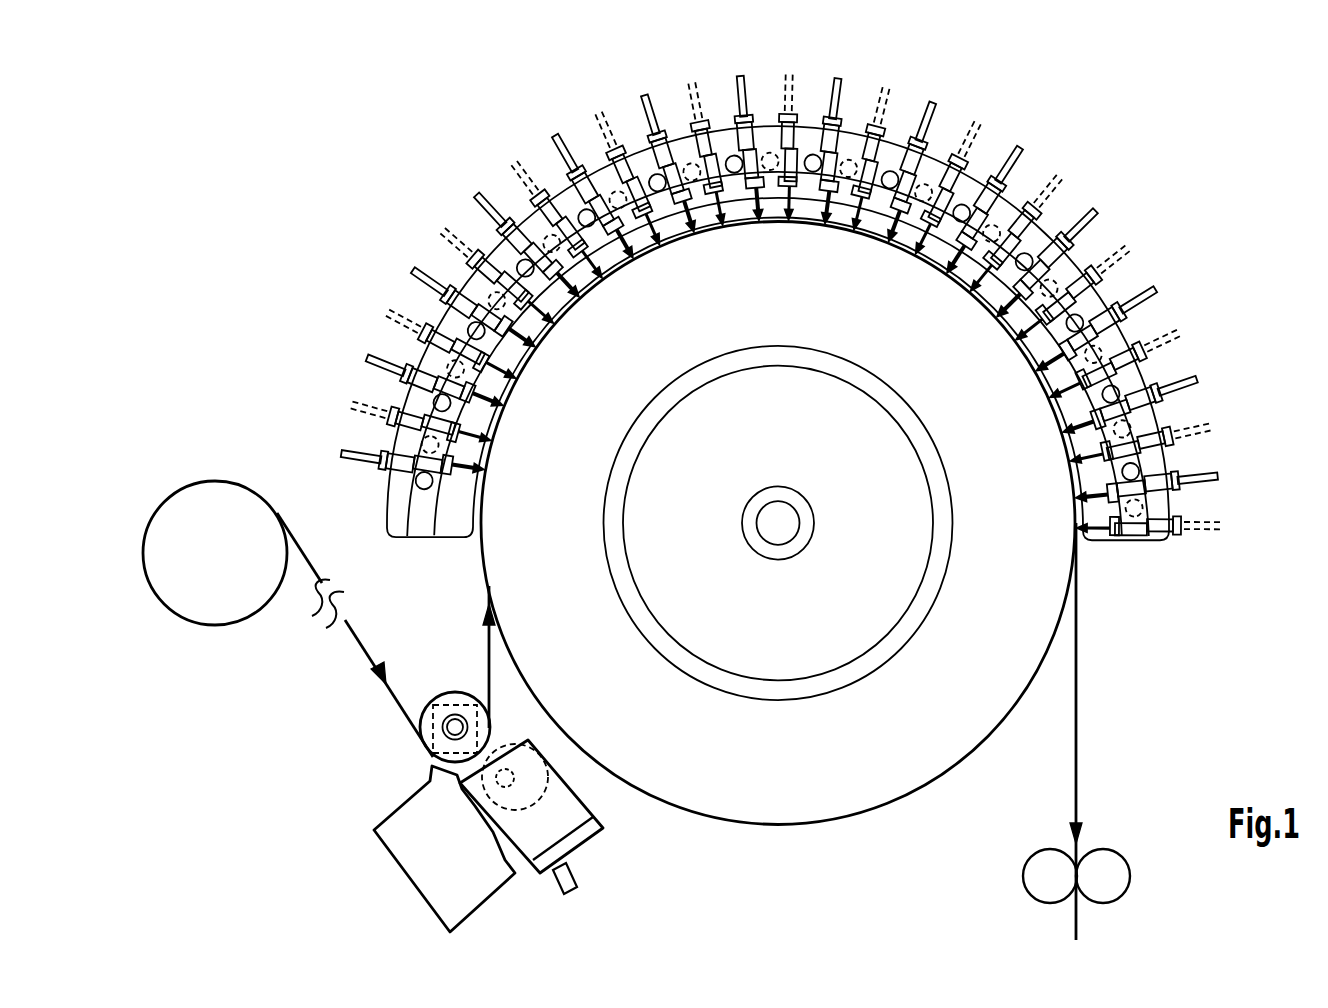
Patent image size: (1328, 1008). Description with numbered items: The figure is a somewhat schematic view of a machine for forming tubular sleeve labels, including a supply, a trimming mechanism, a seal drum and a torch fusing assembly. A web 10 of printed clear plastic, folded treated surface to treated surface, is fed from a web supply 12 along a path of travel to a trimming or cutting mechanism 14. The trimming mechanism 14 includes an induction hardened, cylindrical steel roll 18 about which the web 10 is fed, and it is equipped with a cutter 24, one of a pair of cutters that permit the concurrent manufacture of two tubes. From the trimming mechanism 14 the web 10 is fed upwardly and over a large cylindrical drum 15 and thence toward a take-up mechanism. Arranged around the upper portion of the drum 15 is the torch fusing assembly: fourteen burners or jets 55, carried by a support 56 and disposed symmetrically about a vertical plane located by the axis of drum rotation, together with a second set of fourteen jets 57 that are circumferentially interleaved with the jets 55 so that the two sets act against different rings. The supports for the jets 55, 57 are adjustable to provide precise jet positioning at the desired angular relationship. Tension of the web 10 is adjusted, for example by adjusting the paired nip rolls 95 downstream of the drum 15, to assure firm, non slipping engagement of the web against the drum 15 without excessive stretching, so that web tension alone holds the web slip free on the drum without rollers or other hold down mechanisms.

The web 10 is at (363, 657).
The web supply 12 is at (207, 587).
The trimming mechanism 14 is at (385, 885).
The cylindrical drum 15 is at (858, 806).
The roll 18 is at (457, 688).
The cutter 24 is at (565, 792).
The jets 55 is at (530, 343).
The support 56 is at (1172, 546).
The second set of jets 57 is at (653, 257).
The nip rolls 95 is at (1100, 900).